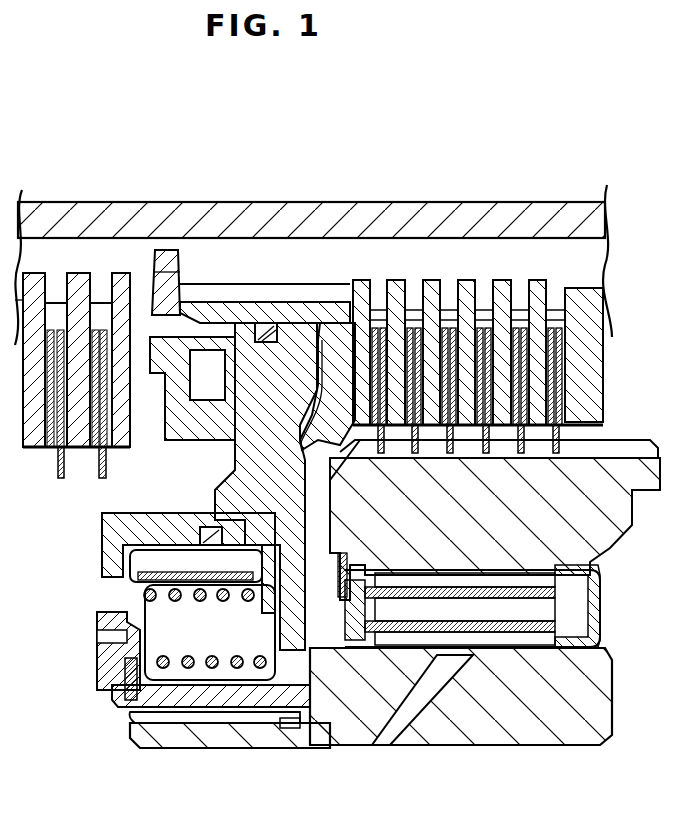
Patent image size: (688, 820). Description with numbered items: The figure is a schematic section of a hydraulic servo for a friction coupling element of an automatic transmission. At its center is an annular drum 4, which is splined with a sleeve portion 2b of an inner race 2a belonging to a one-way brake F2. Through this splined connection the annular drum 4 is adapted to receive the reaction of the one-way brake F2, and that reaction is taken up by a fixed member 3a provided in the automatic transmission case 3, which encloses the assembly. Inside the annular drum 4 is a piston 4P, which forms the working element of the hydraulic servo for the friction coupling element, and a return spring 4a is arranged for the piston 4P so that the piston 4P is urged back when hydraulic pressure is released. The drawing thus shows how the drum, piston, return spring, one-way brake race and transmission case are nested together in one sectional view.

The automatic transmission case 3 is at (460, 212).
The fixed member 3a is at (520, 250).
The annular drum 4 is at (237, 312).
The piston 4P is at (225, 335).
The return spring 4a is at (182, 661).
The inner race 2a is at (540, 735).
The sleeve portion 2b is at (203, 746).
The one-way brake F2 is at (606, 420).